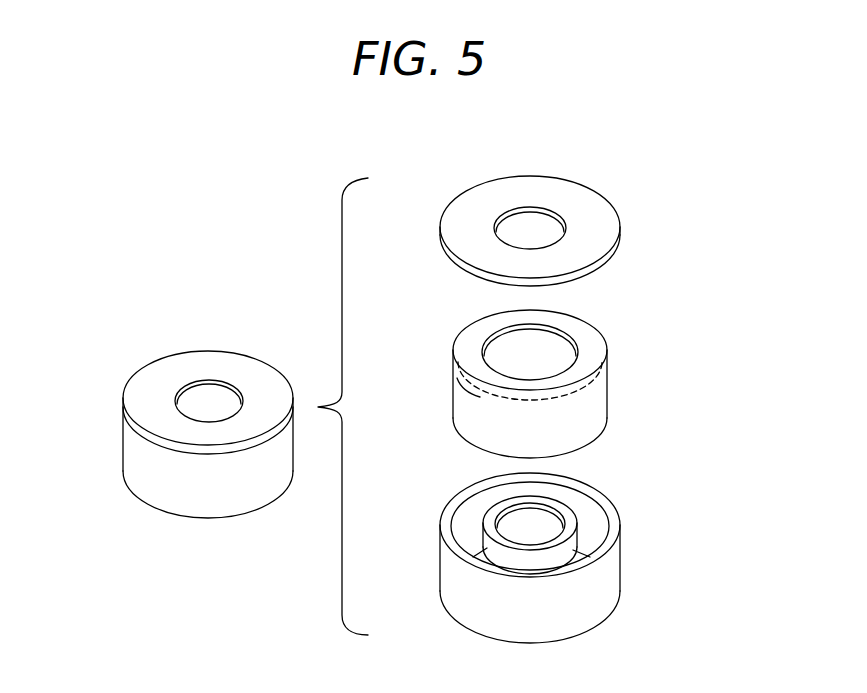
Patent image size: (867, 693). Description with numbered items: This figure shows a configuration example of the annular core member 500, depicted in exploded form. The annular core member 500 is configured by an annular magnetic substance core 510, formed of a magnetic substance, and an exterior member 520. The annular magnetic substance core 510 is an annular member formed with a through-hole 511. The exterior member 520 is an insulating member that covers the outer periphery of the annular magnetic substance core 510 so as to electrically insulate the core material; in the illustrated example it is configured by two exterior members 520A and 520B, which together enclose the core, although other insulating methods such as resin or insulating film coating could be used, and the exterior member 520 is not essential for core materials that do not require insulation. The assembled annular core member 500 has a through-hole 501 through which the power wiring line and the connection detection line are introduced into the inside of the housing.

The annular core member 500 is at (180, 375).
The through-hole 501 is at (203, 402).
The annular magnetic substance core 510 is at (482, 362).
The through-hole 511 is at (520, 355).
The exterior member 520 is at (630, 409).
The exterior member 520A is at (607, 250).
The exterior member 520B is at (620, 530).